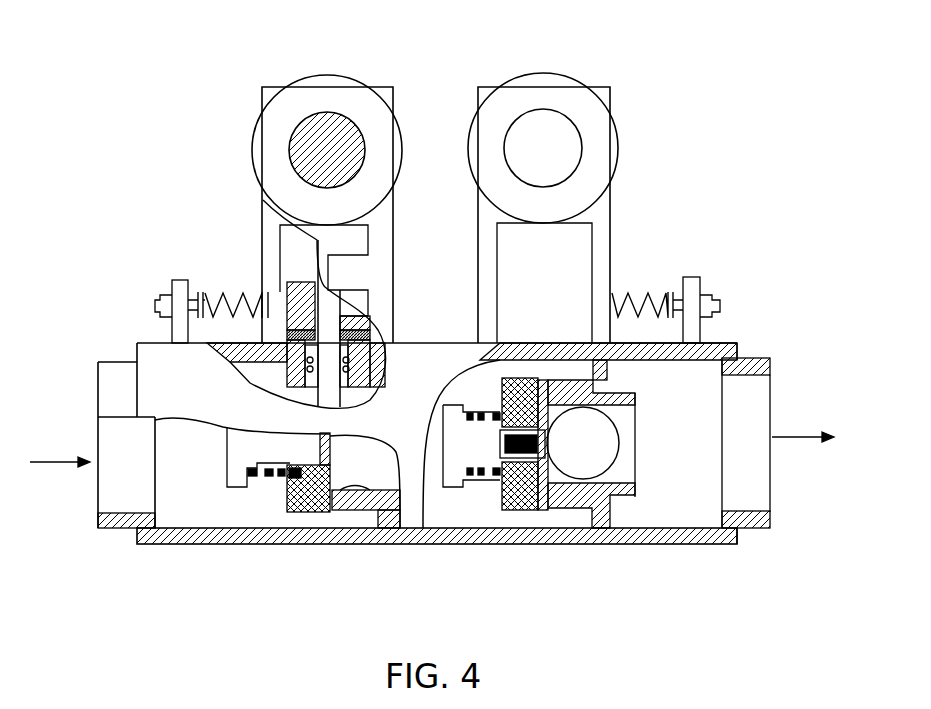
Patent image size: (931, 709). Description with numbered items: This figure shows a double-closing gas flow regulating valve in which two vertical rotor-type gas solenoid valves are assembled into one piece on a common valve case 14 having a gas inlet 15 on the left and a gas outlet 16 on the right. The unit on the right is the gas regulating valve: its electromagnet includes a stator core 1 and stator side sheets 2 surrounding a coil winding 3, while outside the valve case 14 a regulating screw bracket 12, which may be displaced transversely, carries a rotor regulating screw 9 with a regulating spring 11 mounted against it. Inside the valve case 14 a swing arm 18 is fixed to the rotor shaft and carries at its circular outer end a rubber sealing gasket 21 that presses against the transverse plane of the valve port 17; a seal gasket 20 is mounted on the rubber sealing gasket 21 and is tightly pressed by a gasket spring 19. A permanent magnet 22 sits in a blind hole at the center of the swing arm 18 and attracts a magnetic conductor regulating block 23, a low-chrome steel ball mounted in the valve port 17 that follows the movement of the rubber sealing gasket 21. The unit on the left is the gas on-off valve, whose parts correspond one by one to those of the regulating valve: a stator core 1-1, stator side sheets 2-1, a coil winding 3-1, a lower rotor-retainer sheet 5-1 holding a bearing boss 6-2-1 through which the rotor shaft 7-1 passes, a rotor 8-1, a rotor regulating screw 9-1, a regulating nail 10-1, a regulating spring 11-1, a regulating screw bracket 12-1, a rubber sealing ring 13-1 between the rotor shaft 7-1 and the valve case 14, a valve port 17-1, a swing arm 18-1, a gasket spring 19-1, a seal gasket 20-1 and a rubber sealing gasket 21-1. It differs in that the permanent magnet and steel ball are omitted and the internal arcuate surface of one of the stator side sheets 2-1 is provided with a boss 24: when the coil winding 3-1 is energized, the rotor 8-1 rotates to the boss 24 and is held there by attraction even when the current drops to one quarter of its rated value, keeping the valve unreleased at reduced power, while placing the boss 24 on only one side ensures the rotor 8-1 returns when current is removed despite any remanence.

The stator core 1 is at (583, 100).
The stator side sheets 2 is at (560, 133).
The coil winding 3 is at (543, 82).
The stator core 1-1 is at (327, 150).
The stator side sheets 2-1 is at (383, 92).
The coil winding 3-1 is at (323, 93).
The lower rotor-retainer sheet 5-1 is at (318, 323).
The bearing boss 6-2-1 is at (305, 304).
The rotor shaft 7-1 is at (327, 393).
The rotor 8-1 is at (300, 299).
The rotor regulating screw 9-1 is at (178, 300).
The regulating nail 10-1 is at (310, 312).
The regulating spring 11-1 is at (295, 314).
The regulating screw bracket 12-1 is at (283, 309).
The rubber sealing ring 13-1 is at (305, 315).
The rotor regulating screw 9 is at (717, 295).
The regulating spring 11 is at (640, 293).
The regulating screw bracket 12 is at (693, 282).
The valve case 14 is at (743, 517).
The gas inlet 15 is at (123, 483).
The gas outlet 16 is at (755, 477).
The valve port 17 is at (593, 497).
The valve port 17-1 is at (348, 508).
The swing arm 18 is at (450, 468).
The swing arm 18-1 is at (238, 475).
The gasket spring 19 is at (473, 477).
The gasket spring 19-1 is at (268, 473).
The seal gasket 20 is at (507, 450).
The seal gasket 20-1 is at (290, 474).
The rubber sealing gasket 21 is at (510, 500).
The rubber sealing gasket 21-1 is at (305, 500).
The permanent magnet 22 is at (547, 500).
The magnetic conductor regulating block 23 is at (605, 448).
The boss 24 is at (340, 278).